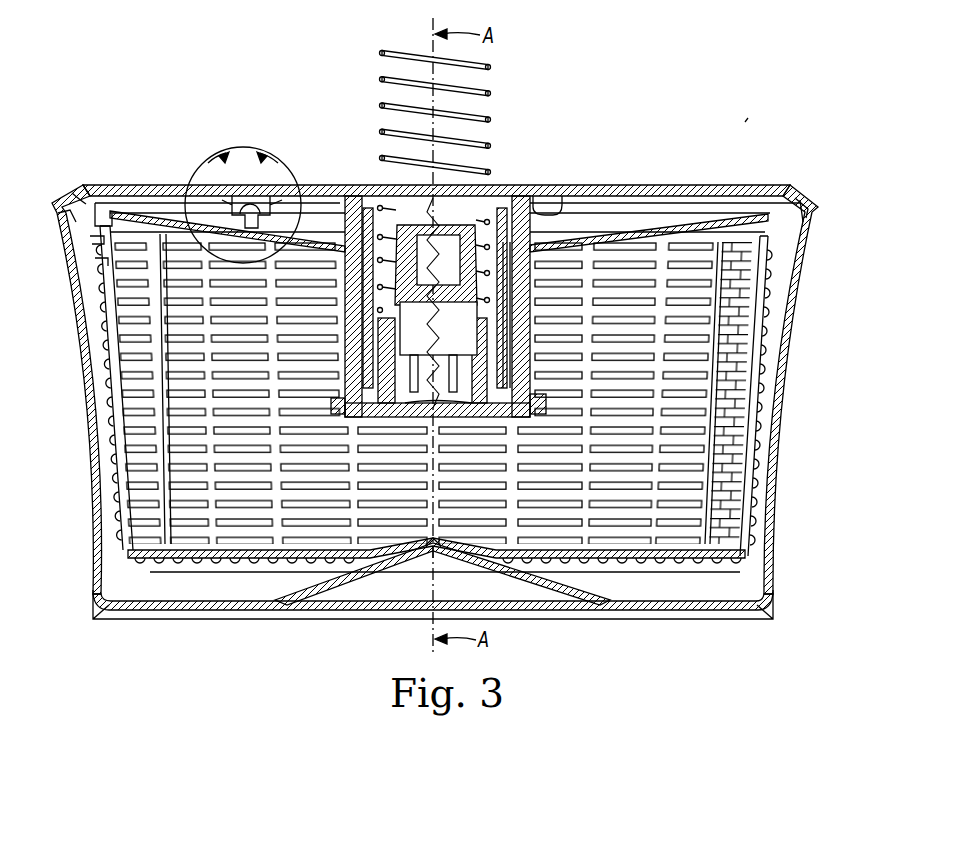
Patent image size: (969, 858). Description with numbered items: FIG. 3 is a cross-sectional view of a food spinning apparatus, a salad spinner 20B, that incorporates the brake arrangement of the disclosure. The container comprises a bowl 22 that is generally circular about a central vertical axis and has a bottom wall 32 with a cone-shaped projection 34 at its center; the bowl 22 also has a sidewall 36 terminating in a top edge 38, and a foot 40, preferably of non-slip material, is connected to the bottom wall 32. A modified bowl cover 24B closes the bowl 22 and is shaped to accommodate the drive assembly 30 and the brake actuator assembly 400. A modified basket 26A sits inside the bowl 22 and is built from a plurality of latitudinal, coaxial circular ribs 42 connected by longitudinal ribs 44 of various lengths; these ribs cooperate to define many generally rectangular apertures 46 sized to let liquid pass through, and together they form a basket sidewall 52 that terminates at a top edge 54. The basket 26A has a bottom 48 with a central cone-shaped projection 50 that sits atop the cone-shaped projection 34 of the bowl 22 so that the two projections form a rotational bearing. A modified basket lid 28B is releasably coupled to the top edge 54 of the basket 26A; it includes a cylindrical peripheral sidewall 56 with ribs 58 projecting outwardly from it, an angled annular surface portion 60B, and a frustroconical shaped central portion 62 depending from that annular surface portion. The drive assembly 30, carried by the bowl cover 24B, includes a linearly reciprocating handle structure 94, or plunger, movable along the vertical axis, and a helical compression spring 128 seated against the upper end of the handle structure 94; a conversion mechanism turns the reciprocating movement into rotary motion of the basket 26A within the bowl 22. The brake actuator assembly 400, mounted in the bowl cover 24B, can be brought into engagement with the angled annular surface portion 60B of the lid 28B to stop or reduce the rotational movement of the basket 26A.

The salad spinner 20B is at (752, 118).
The bowl 22 is at (778, 533).
The bowl cover 24B is at (761, 184).
The basket 26A is at (780, 252).
The basket lid 28B is at (116, 208).
The drive assembly 30 is at (543, 186).
The bottom wall 32 is at (633, 601).
The cone-shaped projection 34 is at (527, 593).
The sidewall 36 is at (94, 396).
The top edge 38 is at (58, 215).
The foot 40 is at (227, 619).
The circular ribs 42 is at (775, 326).
The longitudinal ribs 44 is at (776, 413).
The apertures 46 is at (145, 474).
The bottom 48 is at (167, 568).
The cone-shaped projection 50 is at (441, 560).
The sidewall 52 is at (108, 416).
The top edge 54 is at (92, 242).
The cylindrical peripheral sidewall 56 is at (80, 195).
The ribs 58 is at (797, 198).
The angled annular surface portion 60B is at (96, 262).
The frustroconical shaped central portion 62 is at (530, 390).
The reciprocating handle structure 94 is at (496, 321).
The helical compression spring 128 is at (491, 66).
The brake actuator assembly 400 is at (252, 145).